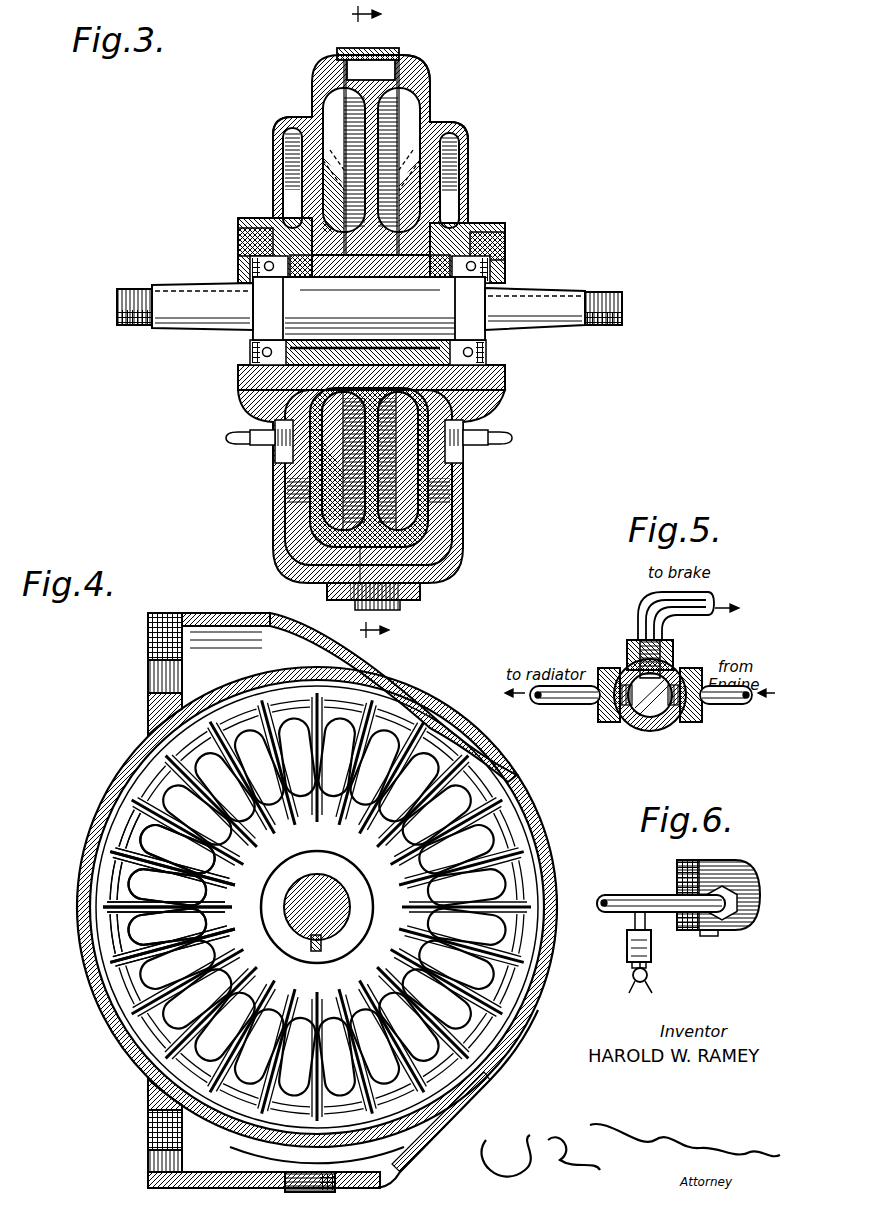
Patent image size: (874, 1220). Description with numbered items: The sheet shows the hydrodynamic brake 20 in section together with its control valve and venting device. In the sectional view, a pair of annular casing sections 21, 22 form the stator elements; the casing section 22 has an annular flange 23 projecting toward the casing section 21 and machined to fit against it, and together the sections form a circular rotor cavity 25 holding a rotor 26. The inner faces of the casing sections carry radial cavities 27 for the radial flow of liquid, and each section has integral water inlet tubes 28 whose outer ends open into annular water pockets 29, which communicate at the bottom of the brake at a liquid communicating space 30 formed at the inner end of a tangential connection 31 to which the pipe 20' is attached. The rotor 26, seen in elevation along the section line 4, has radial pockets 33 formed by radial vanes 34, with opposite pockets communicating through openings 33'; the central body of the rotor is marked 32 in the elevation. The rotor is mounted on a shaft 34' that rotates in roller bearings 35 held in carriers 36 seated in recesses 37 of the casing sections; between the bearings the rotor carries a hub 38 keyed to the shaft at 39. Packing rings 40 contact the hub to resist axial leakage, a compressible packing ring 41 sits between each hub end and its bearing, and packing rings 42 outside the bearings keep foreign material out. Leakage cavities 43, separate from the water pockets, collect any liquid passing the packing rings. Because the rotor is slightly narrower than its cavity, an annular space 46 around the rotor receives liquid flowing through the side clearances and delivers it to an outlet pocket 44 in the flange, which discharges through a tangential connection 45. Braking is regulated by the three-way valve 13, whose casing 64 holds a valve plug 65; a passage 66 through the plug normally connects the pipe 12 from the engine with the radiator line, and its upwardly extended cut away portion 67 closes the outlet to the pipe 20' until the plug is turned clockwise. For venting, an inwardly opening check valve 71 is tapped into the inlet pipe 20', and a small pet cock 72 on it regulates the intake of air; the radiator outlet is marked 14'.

In FIG. 3, the section line 4— 4 is at (363, 325).
In FIG. 5, the pipe 12 is at (720, 704).
In FIG. 5, the three-way valve 13 is at (626, 726).
In FIG. 5, the outlet pipe to radiator 14' is at (565, 704).
In FIG. 3, the brake 20 is at (370, 147).
In FIG. 6, the brake 20 is at (700, 897).
In FIG. 5, the pipe 20' is at (723, 592).
In FIG. 6, the pipe 20' is at (656, 891).
In FIG. 3, the casing section 21 is at (273, 147).
In FIG. 3, the casing section 22 is at (470, 150).
In FIG. 4, the casing section 22 is at (498, 792).
In FIG. 3, the annular flange 23 is at (356, 48).
In FIG. 4, the annular flange 23 is at (86, 960).
In FIG. 3, the rotor cavity 25 is at (420, 84).
In FIG. 3, the rotor 26 is at (385, 92).
In FIG. 4, the rotor 26 is at (482, 820).
In FIG. 3, the radial cavities 27 is at (333, 110).
In FIG. 3, the water inlet tubes 28 is at (322, 132).
In FIG. 3, the annular water pockets 29 is at (292, 178).
In FIG. 3, the liquid communicating space 30 is at (371, 500).
In FIG. 4, the liquid communicating space 30 is at (343, 1101).
In FIG. 4, the tangential connection 31 is at (148, 1130).
In FIG. 3, the shaft 32 is at (364, 280).
In FIG. 4, the shaft 32 is at (317, 897).
In FIG. 3, the radial pockets 33 is at (370, 295).
In FIG. 4, the radial pockets 33 is at (332, 907).
In FIG. 3, the openings 33' is at (371, 312).
In FIG. 4, the openings 33' is at (245, 848).
In FIG. 3, the radial vanes 34 is at (368, 305).
In FIG. 4, the radial vanes 34 is at (401, 882).
In FIG. 3, the shaft 34' is at (369, 293).
In FIG. 3, the roller bearings 35 is at (256, 266).
In FIG. 3, the carriers 36 is at (262, 234).
In FIG. 3, the recesses 37 is at (245, 236).
In FIG. 3, the hub 38 is at (333, 280).
In FIG. 3, the key 39 is at (425, 346).
In FIG. 4, the key 39 is at (316, 952).
In FIG. 3, the packing rings 40 is at (378, 184).
In FIG. 3, the compressible packing ring 41 is at (287, 278).
In FIG. 3, the packing rings 42 is at (502, 284).
In FIG. 3, the leakage cavities 43 is at (272, 418).
In FIG. 3, the outlet pocket 44 is at (372, 78).
In FIG. 4, the outlet pocket 44 is at (302, 660).
In FIG. 4, the tangential connection 45 is at (214, 640).
In FIG. 3, the annular space 46 is at (366, 552).
In FIG. 4, the annular space 46 is at (294, 1150).
In FIG. 5, the casing 64 is at (650, 728).
In FIG. 5, the valve plug 65 is at (672, 722).
In FIG. 5, the passage 66 is at (672, 682).
In FIG. 5, the cut away portion 67 is at (636, 668).
In FIG. 6, the check valve 71 is at (627, 946).
In FIG. 6, the pet cock 72 is at (633, 975).